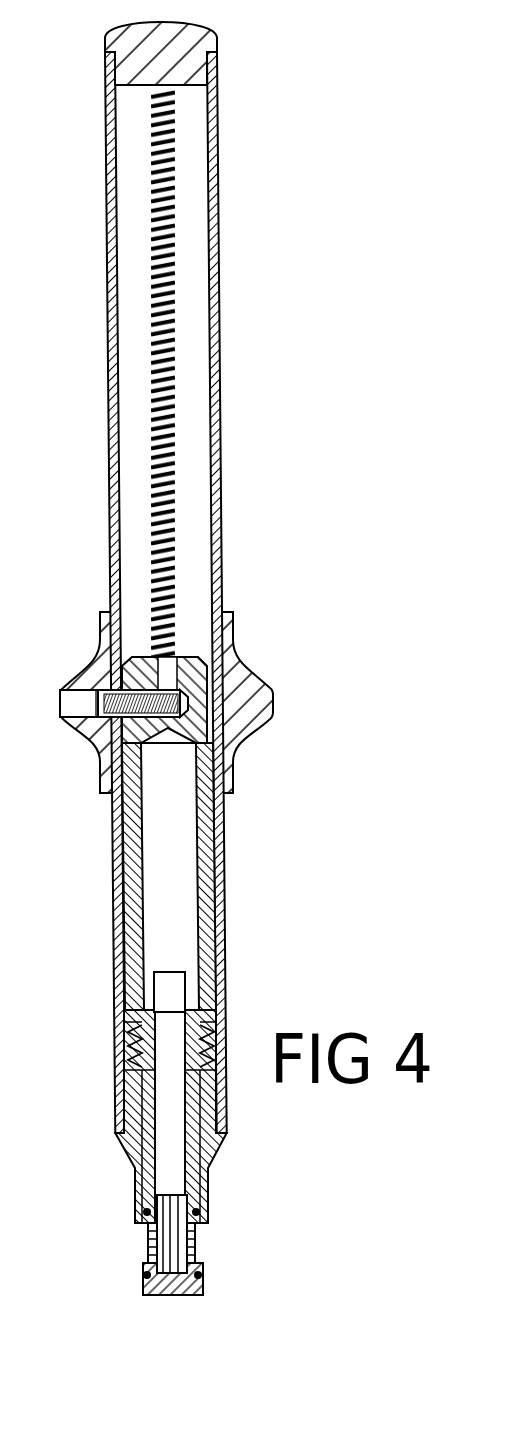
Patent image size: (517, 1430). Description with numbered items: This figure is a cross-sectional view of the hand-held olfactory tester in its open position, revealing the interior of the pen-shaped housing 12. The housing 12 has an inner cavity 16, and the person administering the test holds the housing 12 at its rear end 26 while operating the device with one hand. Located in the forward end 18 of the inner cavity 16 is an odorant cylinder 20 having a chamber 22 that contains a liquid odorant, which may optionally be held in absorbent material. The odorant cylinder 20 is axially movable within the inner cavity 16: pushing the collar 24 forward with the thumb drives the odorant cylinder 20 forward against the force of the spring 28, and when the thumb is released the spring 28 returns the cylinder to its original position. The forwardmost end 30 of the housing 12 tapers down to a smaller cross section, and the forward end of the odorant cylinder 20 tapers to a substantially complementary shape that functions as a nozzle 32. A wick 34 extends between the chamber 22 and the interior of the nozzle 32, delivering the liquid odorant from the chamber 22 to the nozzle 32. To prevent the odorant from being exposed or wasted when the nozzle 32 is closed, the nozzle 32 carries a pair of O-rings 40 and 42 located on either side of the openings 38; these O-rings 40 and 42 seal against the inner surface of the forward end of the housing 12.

The housing 12 is at (220, 353).
The inner cavity 16 is at (186, 468).
The forward end 18 is at (113, 853).
The odorant cylinder 20 is at (223, 842).
The chamber 22 is at (175, 927).
The collar 24 is at (92, 662).
The rear end 26 is at (108, 418).
The spring 28 is at (153, 300).
The forwardmost end 30 is at (135, 1188).
The nozzle 32 is at (145, 1268).
The wick 34 is at (172, 992).
The openings 38 is at (198, 1240).
The O-ring 40 is at (143, 1285).
The O-ring 42 is at (210, 1218).